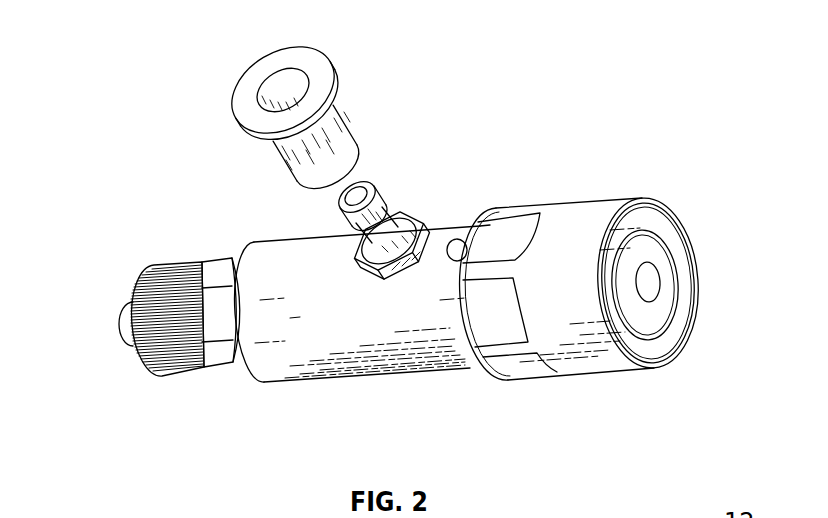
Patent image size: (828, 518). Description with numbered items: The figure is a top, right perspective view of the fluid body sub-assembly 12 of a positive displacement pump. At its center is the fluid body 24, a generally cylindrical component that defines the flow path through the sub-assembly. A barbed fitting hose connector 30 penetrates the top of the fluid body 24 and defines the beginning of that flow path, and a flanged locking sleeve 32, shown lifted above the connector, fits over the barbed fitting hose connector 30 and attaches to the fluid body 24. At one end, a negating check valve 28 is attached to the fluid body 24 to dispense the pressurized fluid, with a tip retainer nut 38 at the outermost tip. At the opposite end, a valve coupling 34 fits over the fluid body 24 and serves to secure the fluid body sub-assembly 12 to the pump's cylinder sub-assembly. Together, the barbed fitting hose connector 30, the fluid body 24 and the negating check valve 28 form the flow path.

The fluid body sub-assembly 12 is at (628, 56).
The fluid body 24 is at (382, 360).
The negating check valve 28 is at (232, 360).
The barbed fitting hose connector 30 is at (377, 192).
The flanged locking sleeve 32 is at (242, 100).
The valve coupling 34 is at (590, 214).
The tip retainer nut 38 is at (140, 364).